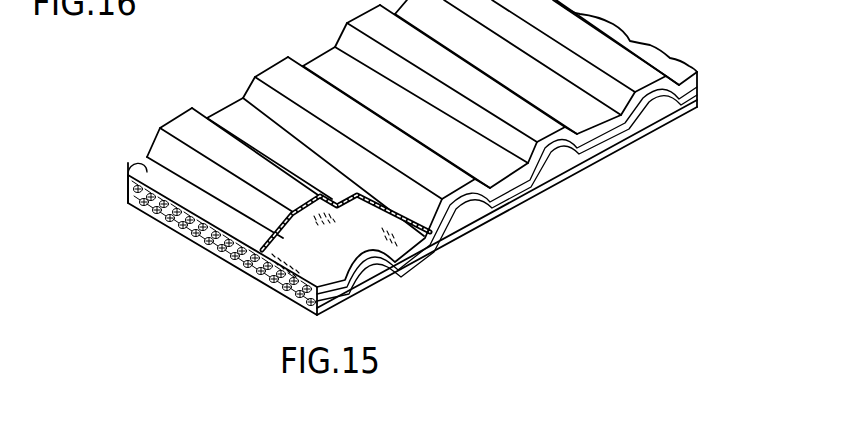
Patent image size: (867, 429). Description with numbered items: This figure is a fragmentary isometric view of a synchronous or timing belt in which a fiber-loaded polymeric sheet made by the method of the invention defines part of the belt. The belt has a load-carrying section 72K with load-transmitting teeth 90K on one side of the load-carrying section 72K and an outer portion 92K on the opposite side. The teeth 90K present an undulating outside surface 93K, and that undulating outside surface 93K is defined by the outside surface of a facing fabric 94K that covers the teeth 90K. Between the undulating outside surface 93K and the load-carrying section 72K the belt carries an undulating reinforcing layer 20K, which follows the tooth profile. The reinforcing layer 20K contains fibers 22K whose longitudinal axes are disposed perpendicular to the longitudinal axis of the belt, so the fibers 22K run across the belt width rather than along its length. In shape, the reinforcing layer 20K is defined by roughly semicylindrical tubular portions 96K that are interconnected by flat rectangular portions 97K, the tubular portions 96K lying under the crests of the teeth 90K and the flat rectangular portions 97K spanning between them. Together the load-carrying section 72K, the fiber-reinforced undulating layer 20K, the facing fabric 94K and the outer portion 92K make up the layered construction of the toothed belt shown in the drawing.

The undulating reinforcing layer 20K is at (328, 285).
The fibers 22K is at (400, 243).
The load-carrying section 72K is at (127, 187).
The load-transmitting teeth 90K is at (560, 154).
The outer portion 92K is at (210, 254).
The undulating outside surface 93K is at (188, 126).
The facing fabric 94K is at (143, 160).
The semicylindrical tubular portions 96K is at (345, 248).
The flat rectangular portions 97K is at (293, 263).